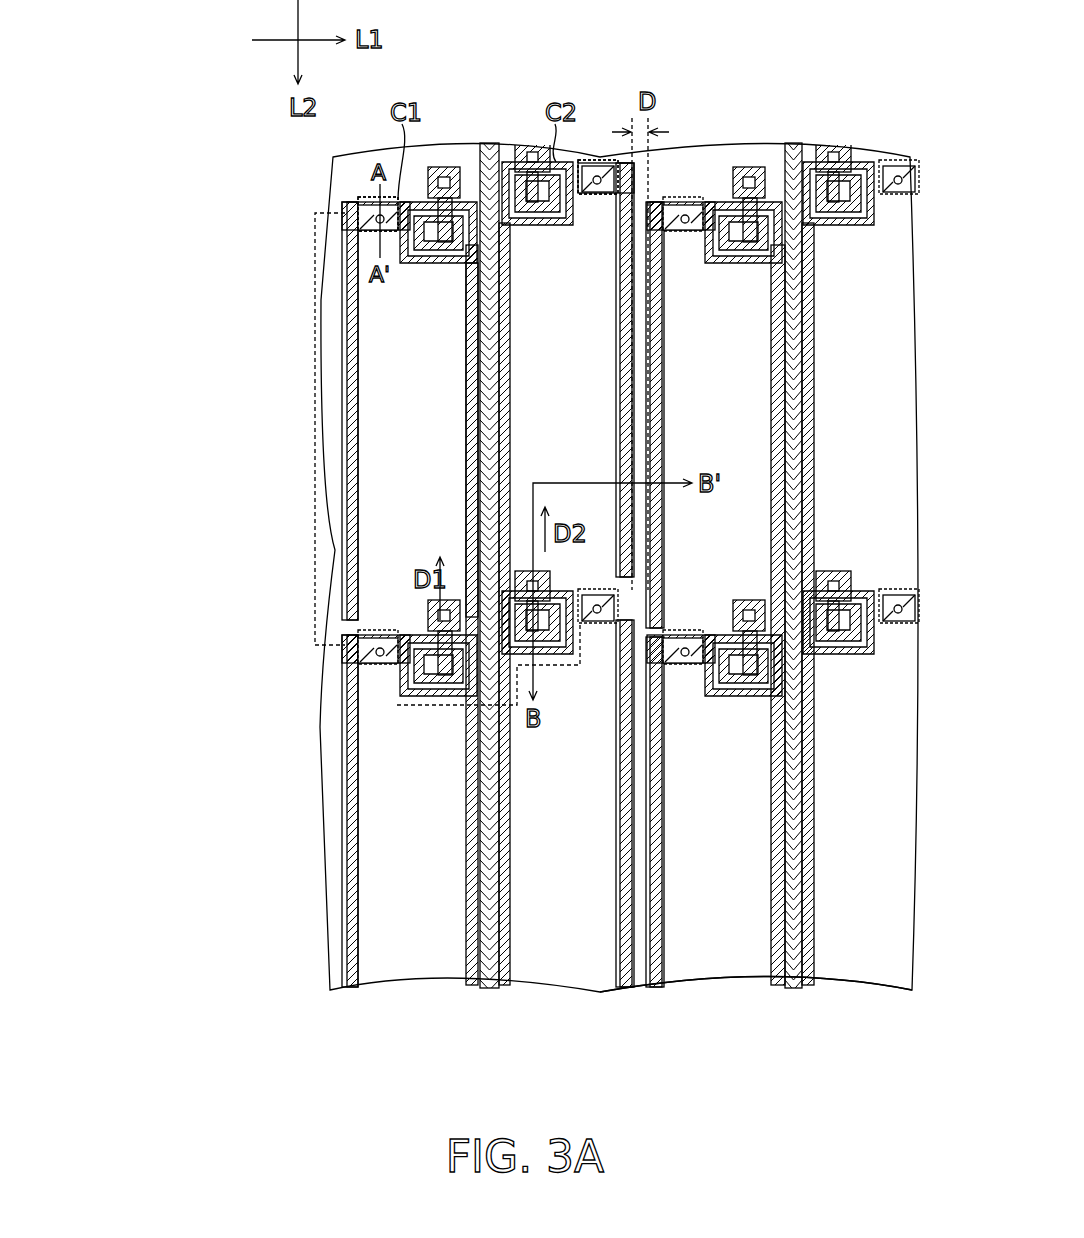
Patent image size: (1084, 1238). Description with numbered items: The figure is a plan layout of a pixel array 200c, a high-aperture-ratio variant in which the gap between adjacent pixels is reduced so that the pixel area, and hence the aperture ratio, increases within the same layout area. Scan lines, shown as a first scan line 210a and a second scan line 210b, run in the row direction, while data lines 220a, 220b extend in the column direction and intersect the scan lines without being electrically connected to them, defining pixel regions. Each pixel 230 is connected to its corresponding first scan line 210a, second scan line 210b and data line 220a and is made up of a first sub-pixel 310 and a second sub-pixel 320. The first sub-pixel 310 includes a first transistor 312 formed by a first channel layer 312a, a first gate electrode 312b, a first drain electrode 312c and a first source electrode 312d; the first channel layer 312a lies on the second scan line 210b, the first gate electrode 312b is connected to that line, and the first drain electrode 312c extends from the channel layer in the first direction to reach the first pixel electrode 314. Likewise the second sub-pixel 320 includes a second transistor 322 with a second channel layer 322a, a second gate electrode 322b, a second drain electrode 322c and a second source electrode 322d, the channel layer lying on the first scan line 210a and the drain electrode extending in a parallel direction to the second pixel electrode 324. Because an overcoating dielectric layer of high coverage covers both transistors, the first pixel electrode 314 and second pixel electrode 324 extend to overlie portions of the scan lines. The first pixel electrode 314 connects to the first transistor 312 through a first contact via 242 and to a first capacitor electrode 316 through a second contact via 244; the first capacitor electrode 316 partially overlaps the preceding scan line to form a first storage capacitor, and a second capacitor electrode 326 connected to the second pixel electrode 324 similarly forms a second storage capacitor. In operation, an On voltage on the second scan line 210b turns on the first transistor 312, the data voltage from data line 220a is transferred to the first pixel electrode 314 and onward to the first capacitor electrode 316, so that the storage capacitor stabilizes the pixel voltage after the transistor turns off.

The pixel array 200c is at (821, 1007).
The first scan line 210a is at (333, 309).
The second scan line 210b is at (334, 838).
The data line 220a is at (488, 143).
The data line 220b is at (792, 143).
The pixel 230 is at (315, 213).
The first contact via 242 is at (540, 635).
The second contact via 244 is at (597, 196).
The first sub-pixel 310 is at (284, 640).
The first transistor 312 is at (316, 660).
The first channel layer 312a is at (440, 660).
The first gate electrode 312b is at (440, 700).
The first drain electrode 312c is at (440, 640).
The first source electrode 312d is at (440, 690).
The first pixel electrode 314 is at (380, 555).
The first capacitor electrode 316 is at (372, 200).
The second sub-pixel 320 is at (284, 356).
The second transistor 322 is at (158, 378).
The second channel layer 322a is at (460, 605).
The second gate electrode 322b is at (420, 600).
The second drain electrode 322c is at (478, 600).
The second source electrode 322d is at (400, 610).
The second pixel electrode 324 is at (525, 353).
The second capacitor electrode 326 is at (586, 160).